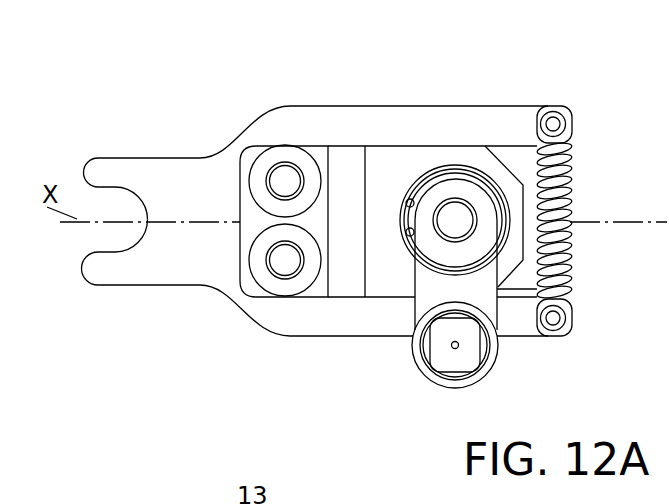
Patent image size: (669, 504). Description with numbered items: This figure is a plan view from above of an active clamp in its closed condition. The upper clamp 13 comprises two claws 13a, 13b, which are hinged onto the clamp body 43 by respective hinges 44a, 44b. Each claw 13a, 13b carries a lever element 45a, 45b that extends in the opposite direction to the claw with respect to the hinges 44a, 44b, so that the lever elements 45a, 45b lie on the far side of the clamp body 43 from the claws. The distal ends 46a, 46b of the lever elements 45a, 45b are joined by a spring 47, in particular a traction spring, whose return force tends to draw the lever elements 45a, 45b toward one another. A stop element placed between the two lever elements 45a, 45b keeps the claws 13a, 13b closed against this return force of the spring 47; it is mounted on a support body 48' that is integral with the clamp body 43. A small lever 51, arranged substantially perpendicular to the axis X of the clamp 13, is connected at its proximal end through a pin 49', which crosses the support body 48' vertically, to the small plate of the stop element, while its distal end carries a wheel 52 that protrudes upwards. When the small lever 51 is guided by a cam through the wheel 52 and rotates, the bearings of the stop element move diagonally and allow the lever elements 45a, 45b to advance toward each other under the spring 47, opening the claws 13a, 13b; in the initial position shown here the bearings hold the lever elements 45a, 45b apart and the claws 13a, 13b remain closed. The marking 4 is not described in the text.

The device 4 is at (333, 217).
The upper clamp 13 is at (428, 72).
The claw 13a is at (173, 263).
The claw 13b is at (173, 177).
The clamp body 43 is at (318, 154).
The hinge 44a is at (282, 270).
The hinge 44b is at (268, 165).
The lever element 45a is at (523, 327).
The lever element 45b is at (461, 125).
The distal end 46a is at (573, 328).
The distal end 46b is at (581, 112).
The spring 47 is at (568, 212).
The support body 48' is at (441, 155).
The pin 49' is at (536, 183).
The small lever 51 is at (470, 279).
The wheel 52 is at (417, 367).